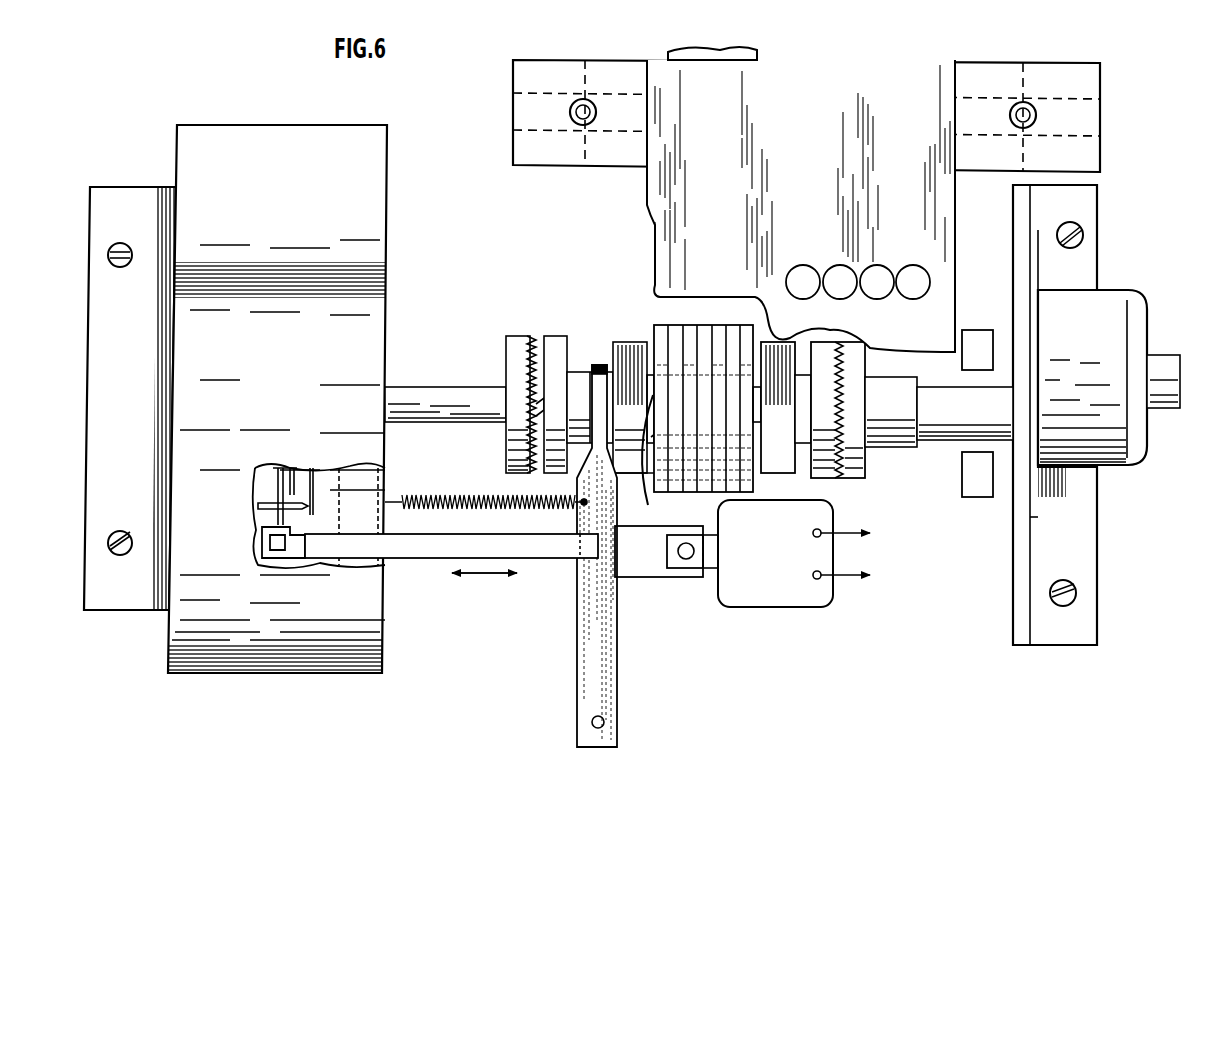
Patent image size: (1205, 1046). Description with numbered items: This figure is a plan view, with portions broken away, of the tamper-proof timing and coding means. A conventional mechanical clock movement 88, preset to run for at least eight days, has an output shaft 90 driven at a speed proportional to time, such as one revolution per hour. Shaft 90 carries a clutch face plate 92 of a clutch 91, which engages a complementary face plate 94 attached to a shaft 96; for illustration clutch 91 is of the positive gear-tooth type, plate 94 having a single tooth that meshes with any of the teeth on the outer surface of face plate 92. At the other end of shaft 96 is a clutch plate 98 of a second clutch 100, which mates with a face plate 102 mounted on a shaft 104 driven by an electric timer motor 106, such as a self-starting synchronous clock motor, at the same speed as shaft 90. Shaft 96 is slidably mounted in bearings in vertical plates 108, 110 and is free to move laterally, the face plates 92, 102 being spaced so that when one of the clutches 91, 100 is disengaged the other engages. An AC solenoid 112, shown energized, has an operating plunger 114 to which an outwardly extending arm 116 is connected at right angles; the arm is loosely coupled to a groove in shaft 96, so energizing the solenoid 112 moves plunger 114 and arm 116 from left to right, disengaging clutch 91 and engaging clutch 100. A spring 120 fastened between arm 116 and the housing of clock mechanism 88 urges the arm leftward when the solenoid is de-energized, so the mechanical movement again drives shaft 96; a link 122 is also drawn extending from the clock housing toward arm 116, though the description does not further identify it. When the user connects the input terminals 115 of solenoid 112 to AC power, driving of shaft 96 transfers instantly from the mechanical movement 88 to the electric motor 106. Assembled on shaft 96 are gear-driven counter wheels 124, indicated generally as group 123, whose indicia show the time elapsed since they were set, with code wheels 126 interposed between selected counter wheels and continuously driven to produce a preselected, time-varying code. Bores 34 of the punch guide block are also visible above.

The bores 34 is at (880, 271).
The mechanical clock movement 88 is at (320, 642).
The output shaft 90 is at (430, 392).
The clutch 91 is at (545, 330).
The clutch face plate 92 is at (510, 355).
The complementary face plate 94 is at (558, 346).
The shaft 96 is at (579, 372).
The clutch plate 98 is at (826, 479).
The clutch 100 is at (877, 452).
The clutch face plate 102 is at (855, 348).
The shaft 104 is at (944, 388).
The electric timer motor 106 is at (1079, 440).
The vertical plate 108 is at (631, 345).
The vertical plate 110 is at (768, 352).
The AC solenoid 112 is at (775, 553).
The operating plunger 114 is at (676, 568).
The input terminals 115 is at (851, 554).
The arm 116 is at (578, 640).
The spring 120 is at (520, 506).
The push rod 122 is at (430, 560).
The group of counter wheels 123 is at (668, 357).
The counter wheels 124 is at (748, 335).
The code wheels 126 is at (730, 422).